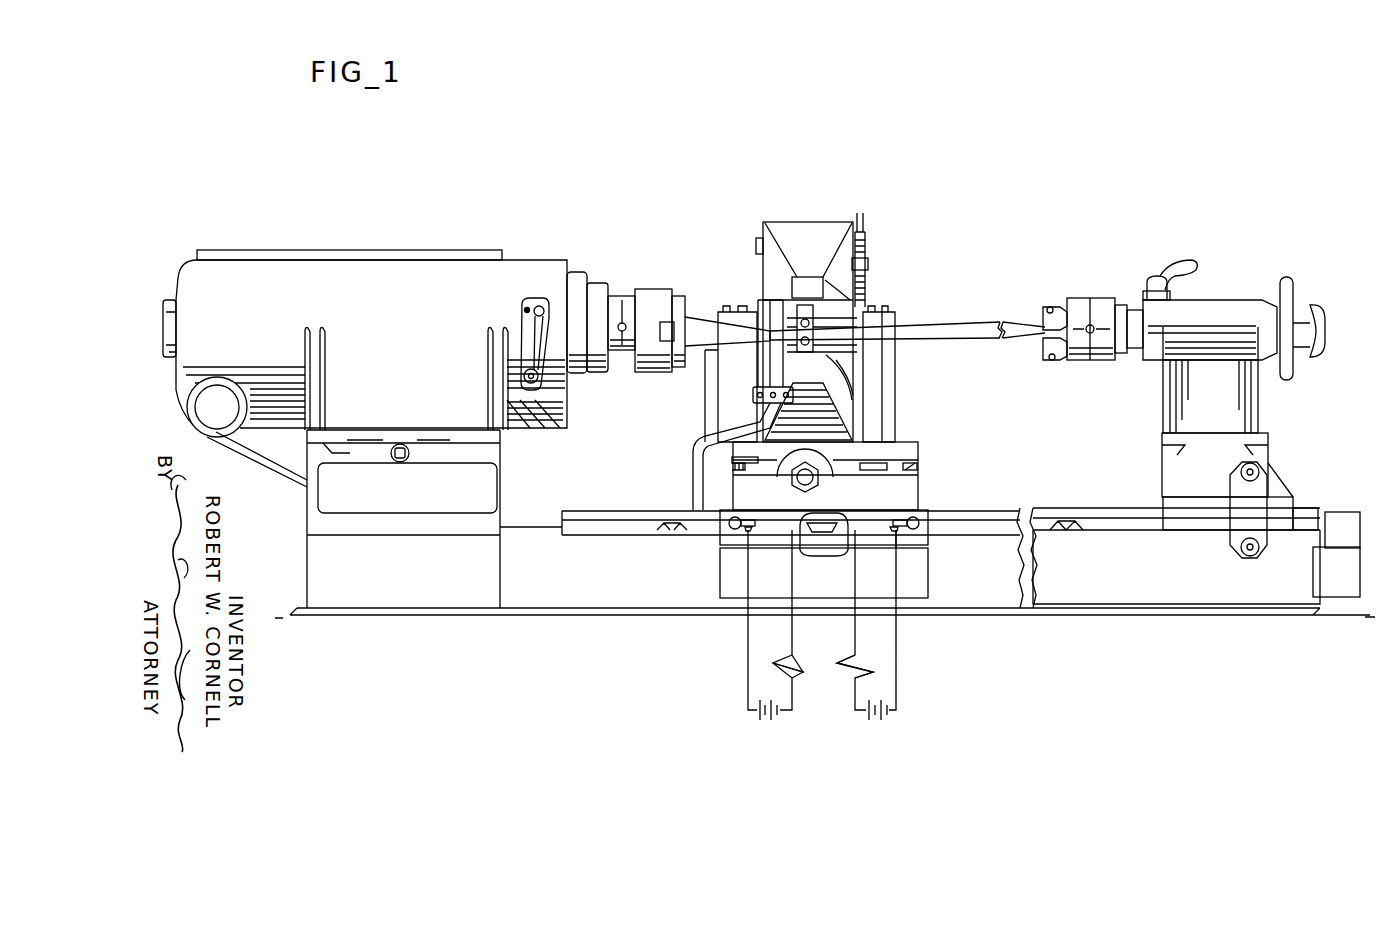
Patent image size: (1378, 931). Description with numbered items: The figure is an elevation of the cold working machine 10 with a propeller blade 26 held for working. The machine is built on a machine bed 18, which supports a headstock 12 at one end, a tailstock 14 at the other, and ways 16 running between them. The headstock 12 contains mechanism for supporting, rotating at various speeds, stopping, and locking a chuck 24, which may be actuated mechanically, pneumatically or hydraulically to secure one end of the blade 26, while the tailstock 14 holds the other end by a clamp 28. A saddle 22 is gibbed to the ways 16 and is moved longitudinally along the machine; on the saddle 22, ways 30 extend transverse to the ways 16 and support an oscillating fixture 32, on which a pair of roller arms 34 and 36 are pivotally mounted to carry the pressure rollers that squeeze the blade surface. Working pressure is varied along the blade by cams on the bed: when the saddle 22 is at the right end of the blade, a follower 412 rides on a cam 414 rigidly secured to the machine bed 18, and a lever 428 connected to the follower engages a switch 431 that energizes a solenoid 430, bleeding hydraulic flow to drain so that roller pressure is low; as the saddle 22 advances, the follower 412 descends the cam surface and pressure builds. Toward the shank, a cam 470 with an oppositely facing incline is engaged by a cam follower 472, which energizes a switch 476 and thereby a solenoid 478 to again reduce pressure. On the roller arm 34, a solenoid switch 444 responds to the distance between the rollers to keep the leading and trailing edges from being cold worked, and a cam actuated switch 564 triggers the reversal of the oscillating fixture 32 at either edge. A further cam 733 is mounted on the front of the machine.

The machine 10 is at (1010, 240).
The headstock 12 is at (528, 268).
The tailstock 14 is at (1220, 305).
The ways 16 is at (997, 508).
The machine bed 18 is at (585, 609).
The saddle 22 is at (722, 574).
The chuck 24 is at (660, 288).
The blade 26 is at (703, 314).
The clamp 28 is at (1078, 298).
The ways 30 is at (733, 462).
The oscillating fixture 32 is at (906, 298).
The roller arm 34 is at (805, 232).
The roller arm 36 is at (878, 390).
The follower 412 is at (916, 517).
The cam 414 is at (1066, 522).
The lever 428 is at (905, 545).
The solenoid 430 is at (858, 672).
The switch 431 is at (873, 523).
The solenoid switch 444 is at (756, 252).
The cam 470 is at (672, 521).
The cam follower 472 is at (740, 517).
The switch 476 is at (770, 523).
The solenoid 478 is at (796, 660).
The cam actuated switch 564 is at (757, 238).
The clamp knob 733 is at (822, 533).